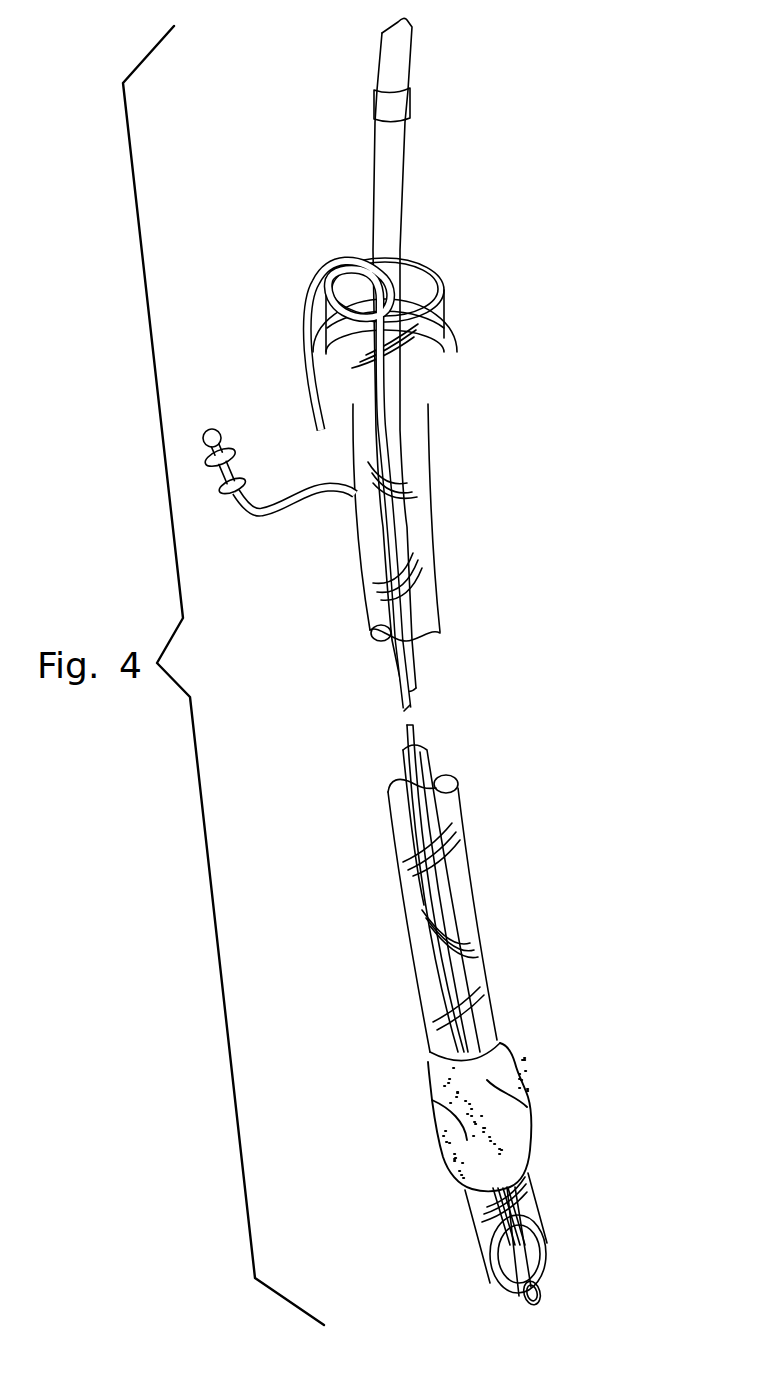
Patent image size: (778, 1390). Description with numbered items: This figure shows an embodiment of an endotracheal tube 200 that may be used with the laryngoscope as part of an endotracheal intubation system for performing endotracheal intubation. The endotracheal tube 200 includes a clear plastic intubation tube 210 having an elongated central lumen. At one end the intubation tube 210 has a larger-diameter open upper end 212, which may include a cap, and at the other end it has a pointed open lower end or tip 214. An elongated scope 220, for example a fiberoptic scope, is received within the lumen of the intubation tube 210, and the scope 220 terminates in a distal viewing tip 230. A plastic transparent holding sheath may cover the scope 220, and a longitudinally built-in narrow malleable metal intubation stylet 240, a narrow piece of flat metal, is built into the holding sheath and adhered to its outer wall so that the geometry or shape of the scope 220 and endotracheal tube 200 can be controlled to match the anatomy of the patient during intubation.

The endotracheal tube 200 is at (343, 203).
The intubation tube 210 is at (467, 486).
The open upper end 212 is at (428, 327).
The open lower end or tip 214 is at (483, 1287).
The elongated scope 220 is at (390, 193).
The distal viewing tip 230 is at (545, 1275).
The intubation stylet 240 is at (307, 329).